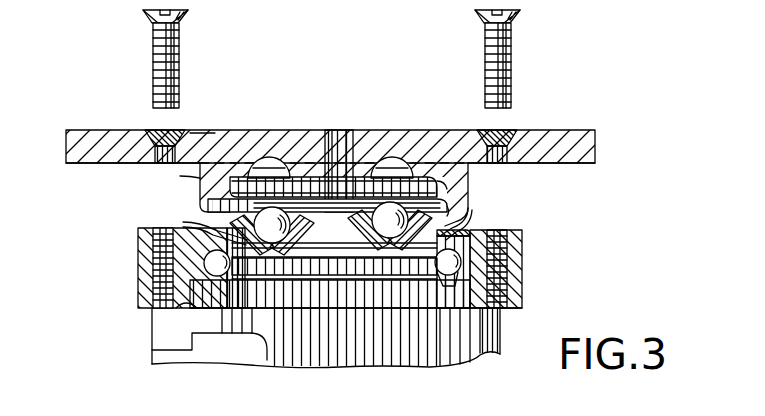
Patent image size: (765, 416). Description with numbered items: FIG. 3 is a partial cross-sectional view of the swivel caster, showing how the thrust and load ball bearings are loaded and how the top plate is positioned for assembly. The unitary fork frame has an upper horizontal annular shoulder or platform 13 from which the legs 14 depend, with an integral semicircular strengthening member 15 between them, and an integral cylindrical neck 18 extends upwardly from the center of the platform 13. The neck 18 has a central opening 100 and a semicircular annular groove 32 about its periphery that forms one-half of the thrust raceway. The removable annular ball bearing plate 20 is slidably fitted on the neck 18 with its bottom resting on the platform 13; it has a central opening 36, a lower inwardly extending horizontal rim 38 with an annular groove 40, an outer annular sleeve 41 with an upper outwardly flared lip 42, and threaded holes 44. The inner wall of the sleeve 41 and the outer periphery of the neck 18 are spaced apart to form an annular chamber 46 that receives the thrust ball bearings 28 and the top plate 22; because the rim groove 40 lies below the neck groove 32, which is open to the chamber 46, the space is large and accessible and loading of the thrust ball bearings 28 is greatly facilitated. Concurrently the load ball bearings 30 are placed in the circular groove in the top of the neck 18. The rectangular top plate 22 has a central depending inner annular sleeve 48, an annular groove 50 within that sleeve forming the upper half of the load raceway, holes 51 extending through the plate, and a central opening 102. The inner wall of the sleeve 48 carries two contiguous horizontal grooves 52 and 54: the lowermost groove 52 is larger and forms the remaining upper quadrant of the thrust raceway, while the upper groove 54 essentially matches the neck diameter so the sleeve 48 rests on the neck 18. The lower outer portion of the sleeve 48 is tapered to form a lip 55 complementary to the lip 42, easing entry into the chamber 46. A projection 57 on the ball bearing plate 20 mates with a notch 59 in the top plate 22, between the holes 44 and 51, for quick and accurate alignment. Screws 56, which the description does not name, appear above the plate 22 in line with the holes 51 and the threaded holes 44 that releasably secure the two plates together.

The upper horizontal annular shoulder or platform 13 is at (190, 302).
The legs 14 is at (198, 352).
The integral semicircular strengthening member 15 is at (353, 357).
The integral cylindrical neck 18 is at (302, 195).
The removable annular ball bearing plate 20 is at (136, 280).
The rectangular top plate 22 is at (97, 100).
The thrust ball bearings 28 is at (212, 266).
The load ball bearings 30 is at (243, 130).
The annular groove 32 is at (298, 262).
The central opening 36 is at (240, 310).
The lower inwardly extending annular and horizontal rim 38 is at (463, 296).
The annular groove 40 is at (435, 290).
The outer annular sleeve 41 is at (523, 263).
The upper outwardly flared lip 42 is at (468, 226).
The threaded holes 44 is at (153, 243).
The annular chamber 46 is at (190, 224).
The central depending inner annular sleeve 48 is at (203, 180).
The annular groove 50 is at (410, 133).
The holes 51 is at (158, 137).
The lowermost groove 52 is at (476, 214).
The upper groove 54 is at (467, 185).
The lip 55 is at (467, 205).
The screw 56 is at (156, 46).
The projection 57 is at (225, 222).
The mating notch 59 is at (198, 131).
The central opening 100 is at (337, 253).
The central opening 102 is at (330, 130).